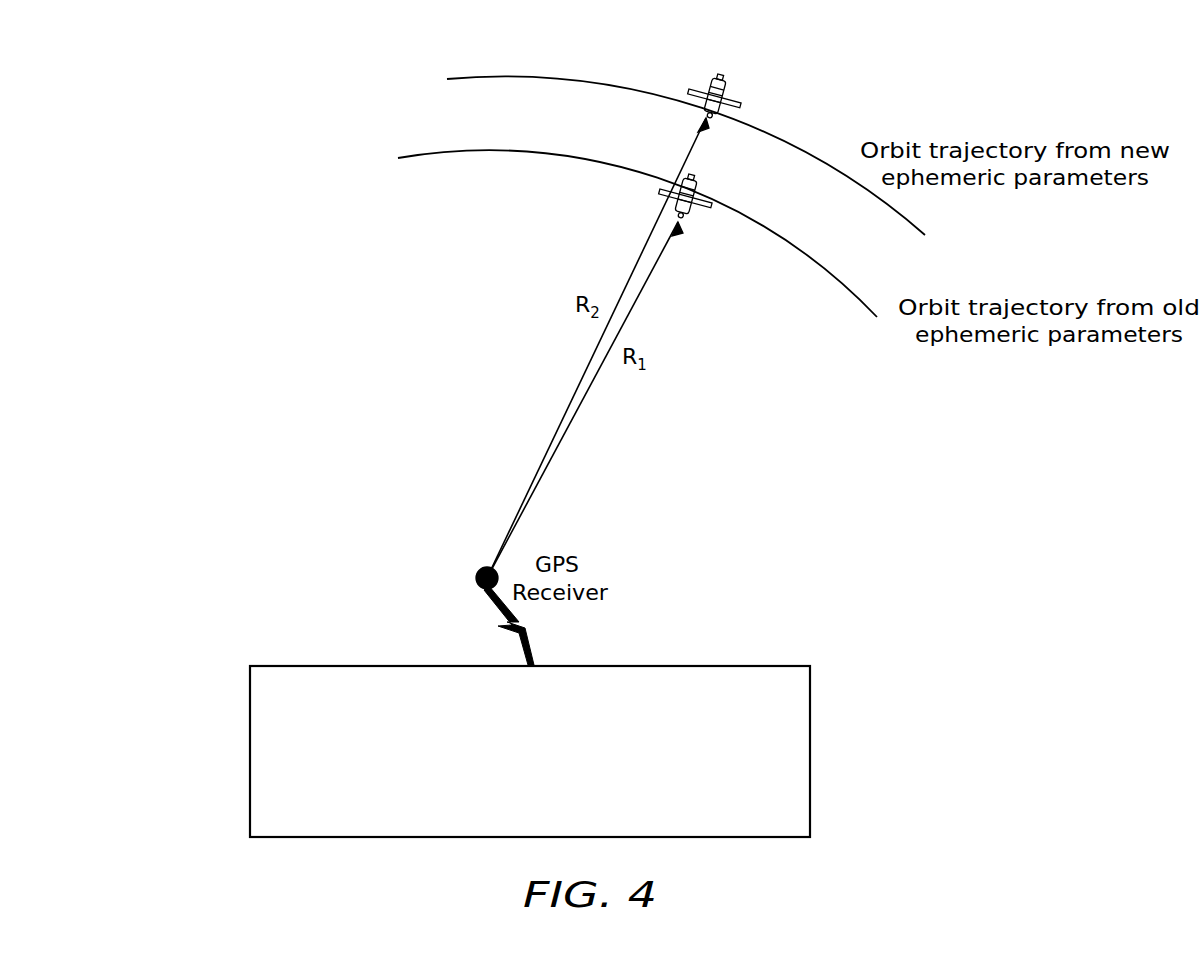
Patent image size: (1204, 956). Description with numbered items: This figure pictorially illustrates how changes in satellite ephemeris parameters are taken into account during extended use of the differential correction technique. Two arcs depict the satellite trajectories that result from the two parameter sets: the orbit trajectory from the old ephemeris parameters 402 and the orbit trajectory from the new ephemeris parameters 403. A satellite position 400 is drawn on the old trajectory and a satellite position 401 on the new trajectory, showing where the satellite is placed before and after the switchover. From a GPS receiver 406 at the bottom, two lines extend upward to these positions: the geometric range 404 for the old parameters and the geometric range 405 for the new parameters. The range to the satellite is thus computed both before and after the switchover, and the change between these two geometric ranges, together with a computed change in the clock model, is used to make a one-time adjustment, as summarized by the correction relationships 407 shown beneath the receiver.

The satellite position on old orbit trajectory 400 is at (696, 185).
The satellite position on new orbit trajectory 401 is at (722, 77).
The orbit trajectory from old ephemeris parameters 402 is at (743, 230).
The orbit trajectory from new ephemeris parameters 403 is at (806, 143).
The geometric range for old parameters 404 is at (636, 305).
The geometric range for new parameters 405 is at (597, 353).
The GPS receiver 406 is at (482, 568).
The range correction equations box 407 is at (790, 663).